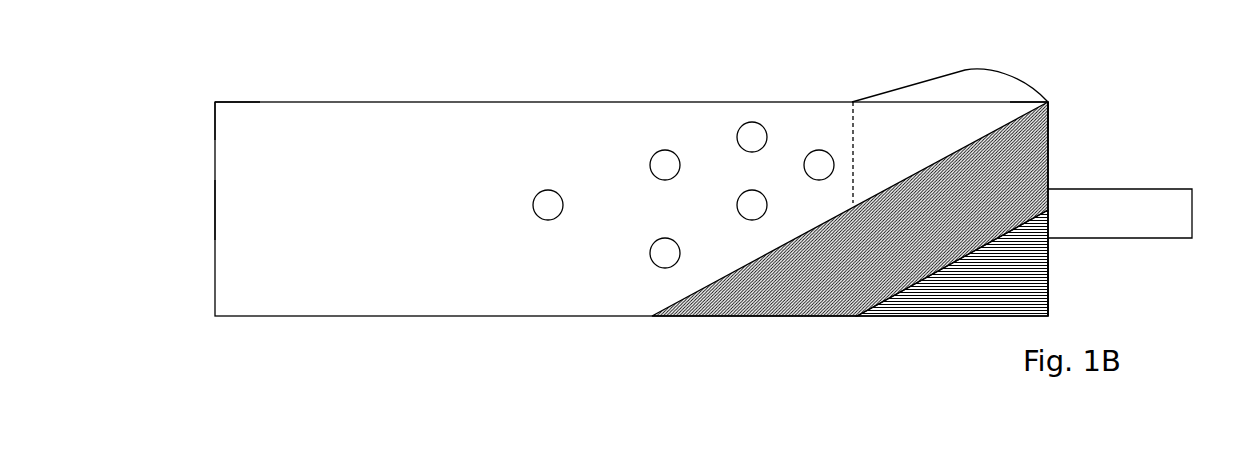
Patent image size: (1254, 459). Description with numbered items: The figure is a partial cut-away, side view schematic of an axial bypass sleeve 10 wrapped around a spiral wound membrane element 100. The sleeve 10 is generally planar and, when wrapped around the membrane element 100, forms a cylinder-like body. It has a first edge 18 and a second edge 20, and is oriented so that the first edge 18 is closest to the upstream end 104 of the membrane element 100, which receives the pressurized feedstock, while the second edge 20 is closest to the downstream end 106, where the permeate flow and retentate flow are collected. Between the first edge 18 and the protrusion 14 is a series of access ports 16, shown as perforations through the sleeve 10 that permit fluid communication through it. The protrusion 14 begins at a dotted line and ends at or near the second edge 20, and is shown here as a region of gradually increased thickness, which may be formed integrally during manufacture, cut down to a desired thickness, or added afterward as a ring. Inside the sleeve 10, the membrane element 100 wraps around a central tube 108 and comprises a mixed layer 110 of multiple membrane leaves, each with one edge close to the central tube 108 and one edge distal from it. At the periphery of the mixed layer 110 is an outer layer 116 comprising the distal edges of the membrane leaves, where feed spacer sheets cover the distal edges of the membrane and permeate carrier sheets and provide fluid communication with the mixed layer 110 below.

The axial bypass sleeve 10 is at (648, 225).
The protrusion 14 is at (930, 80).
The access port 16 is at (746, 125).
The first edge 18 is at (214, 102).
The second edge 20 is at (1048, 102).
The spiral wound membrane element 100 is at (1058, 147).
The upstream end 104 is at (184, 209).
The downstream end 106 is at (1069, 287).
The central tube 108 is at (1140, 196).
The mixed layer 110 is at (970, 285).
The outer layer 116 is at (795, 285).